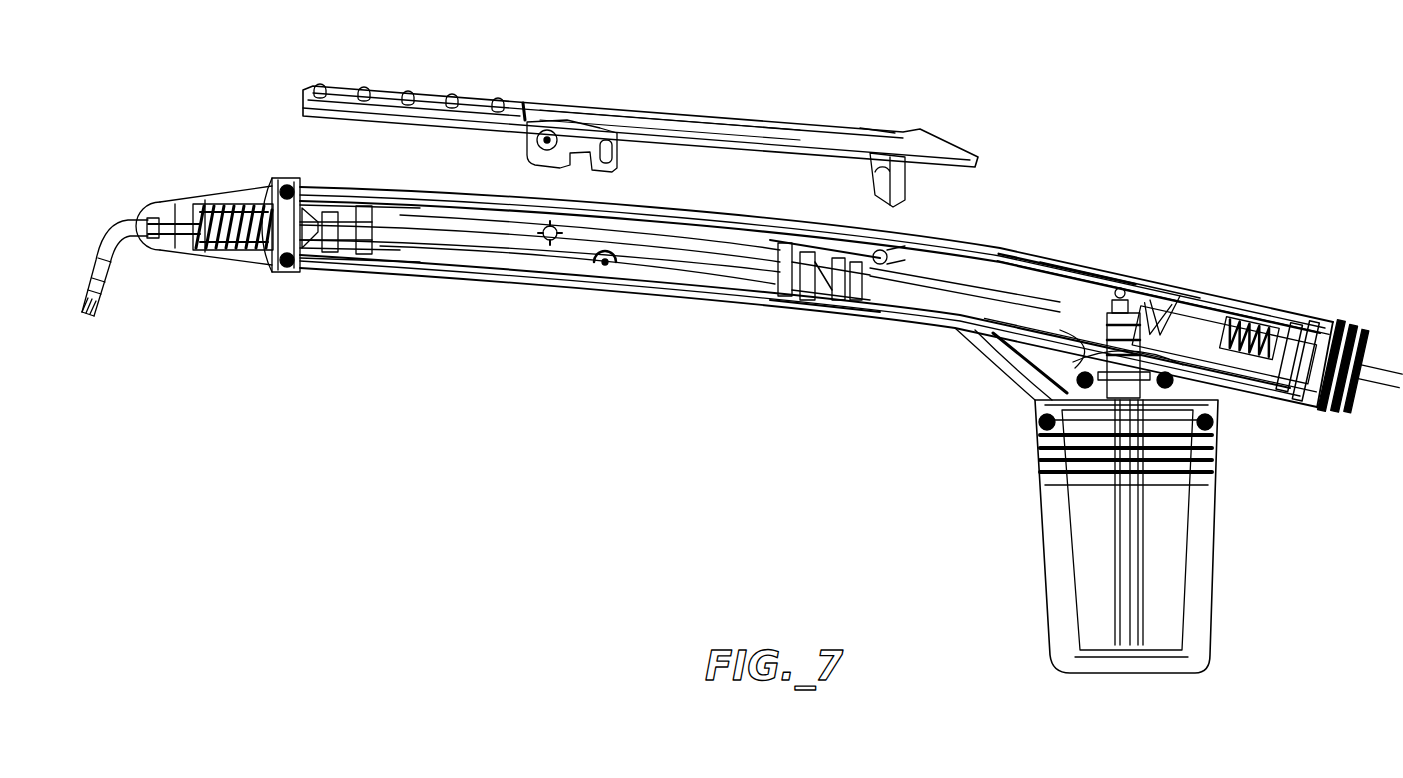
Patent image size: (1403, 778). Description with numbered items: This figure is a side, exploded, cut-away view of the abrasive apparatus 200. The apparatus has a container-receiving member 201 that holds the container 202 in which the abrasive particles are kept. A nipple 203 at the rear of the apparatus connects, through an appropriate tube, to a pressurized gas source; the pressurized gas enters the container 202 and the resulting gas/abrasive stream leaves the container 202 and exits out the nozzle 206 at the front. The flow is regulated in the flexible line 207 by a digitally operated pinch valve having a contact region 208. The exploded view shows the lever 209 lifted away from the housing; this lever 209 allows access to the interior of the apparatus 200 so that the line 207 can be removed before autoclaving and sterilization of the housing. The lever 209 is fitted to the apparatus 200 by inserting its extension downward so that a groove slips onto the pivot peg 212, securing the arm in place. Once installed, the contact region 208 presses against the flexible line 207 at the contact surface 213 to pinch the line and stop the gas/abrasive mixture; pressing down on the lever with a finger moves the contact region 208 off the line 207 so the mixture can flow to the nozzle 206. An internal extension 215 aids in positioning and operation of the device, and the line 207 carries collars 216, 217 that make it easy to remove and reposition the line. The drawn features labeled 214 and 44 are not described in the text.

The apparatus 200 is at (500, 380).
The container-receiving member 201 is at (1036, 455).
The container 202 is at (1052, 552).
The nipple 203 is at (1395, 416).
The nozzle 206 is at (98, 294).
The line 207 is at (393, 232).
The contact region 208 is at (620, 177).
The lever 209 is at (650, 96).
The pivot peg 212 is at (880, 252).
The contact surface 213 is at (606, 264).
The buttons 214 is at (358, 82).
The internal extension 215 is at (550, 226).
The collar 216 is at (365, 228).
The collar 217 is at (784, 292).
The circuit board 44 is at (1062, 262).